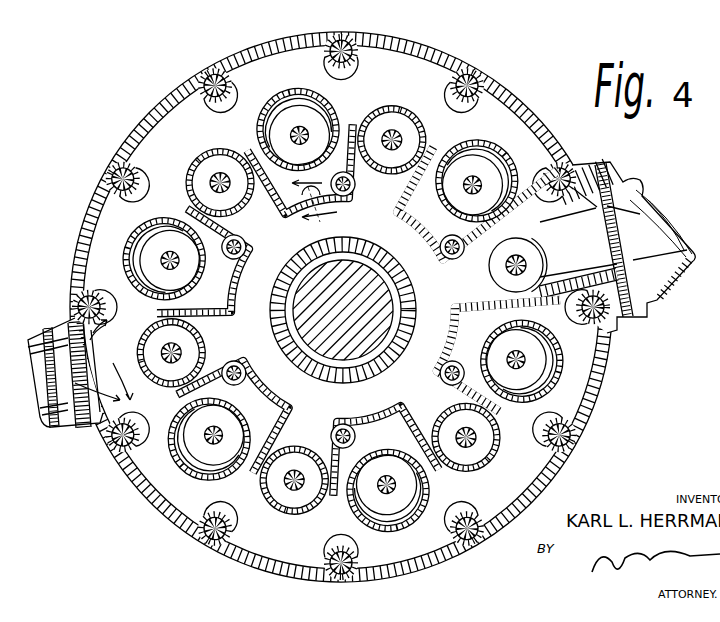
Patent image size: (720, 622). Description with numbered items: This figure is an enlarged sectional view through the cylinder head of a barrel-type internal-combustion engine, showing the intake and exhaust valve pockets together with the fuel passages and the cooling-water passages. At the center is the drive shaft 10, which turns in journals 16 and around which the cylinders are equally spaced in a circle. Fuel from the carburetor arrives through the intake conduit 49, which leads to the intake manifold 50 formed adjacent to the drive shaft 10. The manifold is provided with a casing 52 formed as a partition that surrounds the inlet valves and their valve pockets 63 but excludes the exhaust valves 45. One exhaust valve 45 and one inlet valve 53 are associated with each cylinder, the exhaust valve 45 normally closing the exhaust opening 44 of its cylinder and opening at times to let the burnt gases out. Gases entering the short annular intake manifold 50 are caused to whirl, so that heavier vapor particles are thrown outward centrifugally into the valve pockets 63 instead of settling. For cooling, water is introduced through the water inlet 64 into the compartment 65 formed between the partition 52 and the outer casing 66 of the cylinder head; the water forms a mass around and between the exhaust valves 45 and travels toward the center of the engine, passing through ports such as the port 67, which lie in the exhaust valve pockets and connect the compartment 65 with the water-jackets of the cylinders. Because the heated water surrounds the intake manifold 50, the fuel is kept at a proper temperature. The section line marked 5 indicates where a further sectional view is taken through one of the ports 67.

The section line 5- 5 is at (317, 195).
The drive shaft 10 is at (368, 340).
The journals 16 is at (316, 362).
The exhaust opening 44 is at (125, 258).
The exhaust valve 45 is at (298, 128).
The intake conduit 49 is at (670, 277).
The intake manifold 50 is at (440, 281).
The casing 52 is at (195, 152).
The inlet valve 53 is at (394, 126).
The valve pockets 63 is at (228, 335).
The water inlet 64 is at (46, 427).
The compartment 65 is at (580, 378).
The outer casing 66 is at (550, 481).
The port 67 is at (352, 184).